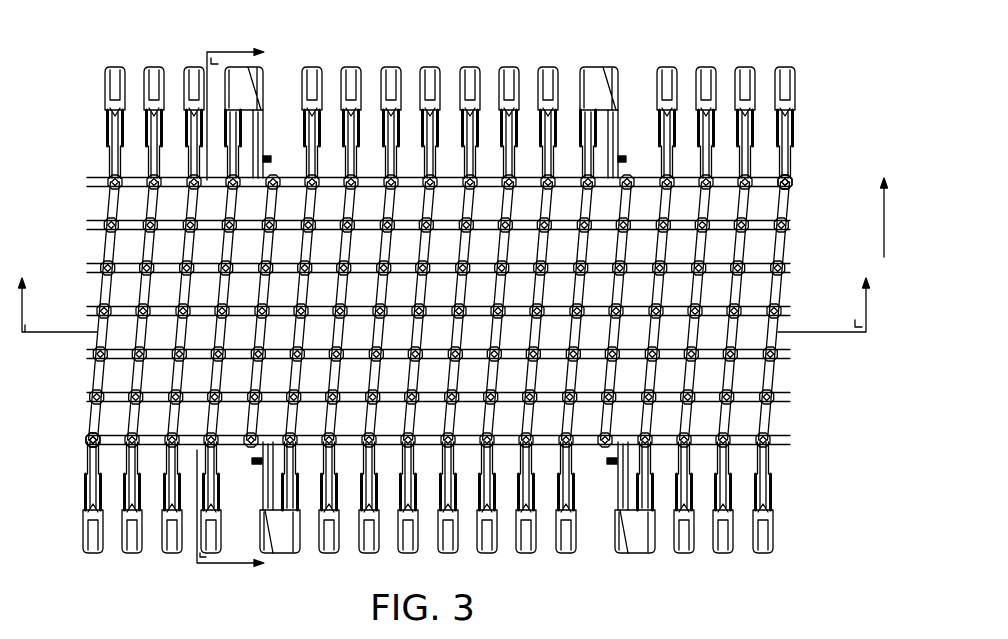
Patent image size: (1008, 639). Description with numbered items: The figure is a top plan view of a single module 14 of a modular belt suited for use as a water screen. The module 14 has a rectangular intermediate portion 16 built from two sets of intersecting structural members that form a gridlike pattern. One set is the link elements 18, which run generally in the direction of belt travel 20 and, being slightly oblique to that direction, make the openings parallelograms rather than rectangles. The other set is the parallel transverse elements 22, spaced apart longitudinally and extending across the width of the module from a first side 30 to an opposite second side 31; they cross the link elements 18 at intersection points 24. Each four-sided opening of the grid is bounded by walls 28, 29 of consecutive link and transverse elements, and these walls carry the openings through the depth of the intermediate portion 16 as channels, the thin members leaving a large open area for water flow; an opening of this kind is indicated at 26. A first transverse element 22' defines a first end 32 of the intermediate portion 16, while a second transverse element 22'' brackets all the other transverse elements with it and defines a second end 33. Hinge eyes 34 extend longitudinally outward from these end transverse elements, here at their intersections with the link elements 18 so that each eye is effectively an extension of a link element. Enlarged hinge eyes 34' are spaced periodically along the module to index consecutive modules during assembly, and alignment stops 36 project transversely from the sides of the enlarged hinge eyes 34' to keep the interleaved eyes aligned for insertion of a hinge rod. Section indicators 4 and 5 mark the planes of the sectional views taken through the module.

The module 14 is at (396, 54).
The intermediate portion 16 is at (803, 178).
The link elements 18 is at (98, 287).
The direction of belt travel 20 is at (884, 226).
The transverse elements 22 is at (408, 368).
The first transverse element 22' is at (457, 457).
The second transverse element 22'' is at (413, 238).
The intersection points 24 is at (655, 174).
The opening 26 is at (111, 423).
The wall 28 is at (493, 419).
The wall 29 is at (508, 391).
The first side 30 is at (792, 178).
The second side 31 is at (87, 225).
The first end 32 is at (88, 446).
The second end 33 is at (100, 188).
The hinge eyes 34 is at (469, 310).
The enlarged hinge eyes 34' is at (387, 514).
The alignment stops 36 is at (613, 468).
The section line 4- 4 is at (441, 318).
The section line 5- 5 is at (222, 310).